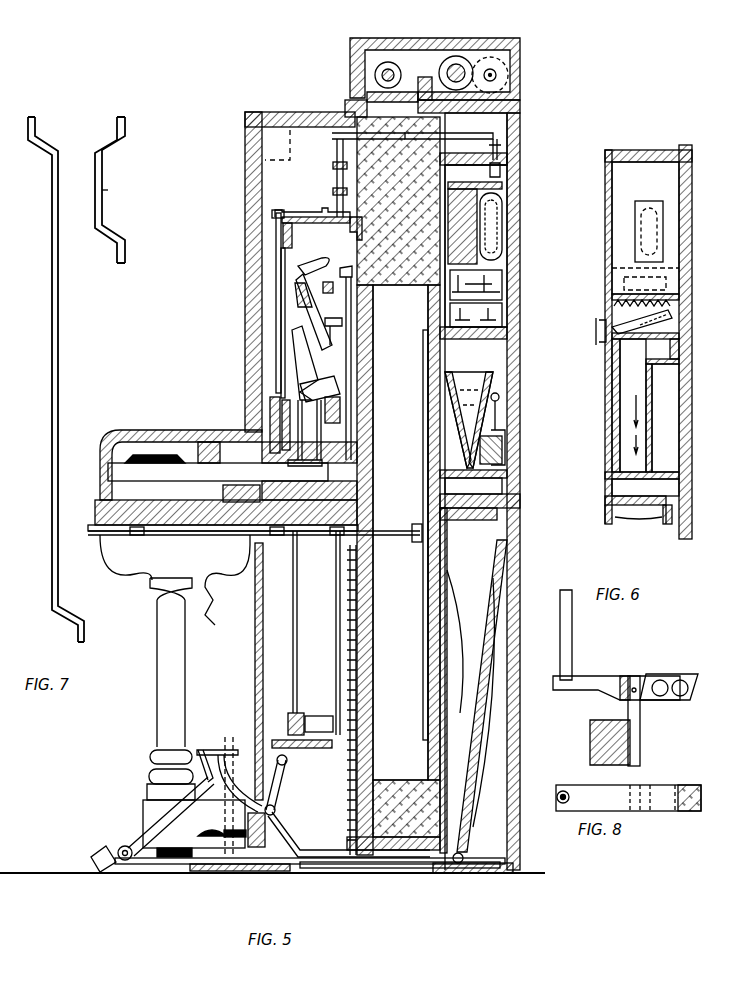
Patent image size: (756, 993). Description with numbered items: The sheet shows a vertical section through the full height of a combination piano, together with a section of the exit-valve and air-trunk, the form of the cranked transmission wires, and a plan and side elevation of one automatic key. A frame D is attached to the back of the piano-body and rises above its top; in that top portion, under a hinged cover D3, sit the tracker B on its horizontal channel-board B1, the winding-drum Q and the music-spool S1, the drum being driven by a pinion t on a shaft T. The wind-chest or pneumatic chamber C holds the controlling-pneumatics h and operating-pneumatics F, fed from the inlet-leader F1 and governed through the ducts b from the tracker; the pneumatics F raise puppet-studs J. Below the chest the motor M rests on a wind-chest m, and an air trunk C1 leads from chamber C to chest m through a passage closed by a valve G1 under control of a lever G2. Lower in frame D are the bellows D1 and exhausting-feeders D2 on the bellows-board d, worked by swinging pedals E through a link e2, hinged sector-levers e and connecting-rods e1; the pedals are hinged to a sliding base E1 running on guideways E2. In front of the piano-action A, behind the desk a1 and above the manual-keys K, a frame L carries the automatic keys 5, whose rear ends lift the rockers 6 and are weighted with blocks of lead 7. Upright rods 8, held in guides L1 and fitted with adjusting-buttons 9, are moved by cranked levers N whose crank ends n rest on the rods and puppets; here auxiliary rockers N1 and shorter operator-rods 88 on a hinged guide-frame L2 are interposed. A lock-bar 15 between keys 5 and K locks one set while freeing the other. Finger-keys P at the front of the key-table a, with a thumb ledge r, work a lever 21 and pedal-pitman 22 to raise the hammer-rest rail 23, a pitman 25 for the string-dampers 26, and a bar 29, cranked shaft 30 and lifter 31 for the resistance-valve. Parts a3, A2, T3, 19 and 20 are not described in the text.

In FIG. 5, the hinged cover D3 is at (405, 46).
In FIG. 5, the winding-drum Q is at (457, 56).
In FIG. 5, the music-spool S1 is at (376, 75).
In FIG. 5, the tracker B is at (424, 78).
In FIG. 5, the pinion t is at (497, 72).
In FIG. 5, the shaft T is at (497, 75).
In FIG. 5, the cranked wires or levers N is at (360, 120).
In FIG. 7, the cranked wires or levers N is at (52, 362).
In FIG. 5, the adjusting-buttons 9 is at (332, 133).
In FIG. 5, the horizontal channel-board B1 is at (505, 108).
In FIG. 5, the ducts b is at (520, 126).
In FIG. 5, the crank ends n is at (494, 147).
In FIG. 7, the crank ends n is at (90, 372).
In FIG. 5, the puppet-studs J is at (507, 158).
In FIG. 5, the shorter operator-rods 88 is at (333, 165).
In FIG. 5, the auxiliary rockers N1 is at (306, 215).
In FIG. 7, the auxiliary rockers N1 is at (114, 191).
In FIG. 5, the wind-chest or pneumatic chamber C is at (507, 205).
In FIG. 6, the wind-chest or pneumatic chamber C is at (645, 228).
In FIG. 5, the guides L1 is at (276, 238).
In FIG. 5, the support or frame L is at (294, 236).
In FIG. 8, the support or frame L is at (612, 721).
In FIG. 5, the bar or guide-frame L2 is at (340, 233).
In FIG. 5, the casing block a3 is at (392, 180).
In FIG. 5, the operating-pneumatics F is at (492, 240).
In FIG. 5, the upright rods or operators 8 is at (276, 270).
In FIG. 8, the upright rods or operators 8 is at (565, 608).
In FIG. 5, the inlet-leader F1 is at (502, 282).
In FIG. 5, the hammer-rest rail 23 is at (294, 298).
In FIG. 5, the string-dampers 26 is at (354, 272).
In FIG. 5, the piano-action A is at (300, 322).
In FIG. 5, the desk or front casing a1 is at (296, 345).
In FIG. 5, the controlling-pneumatics h is at (502, 318).
In FIG. 5, the column A2 is at (398, 570).
In FIG. 5, the lifter 31 is at (426, 370).
In FIG. 5, the hopper T3 is at (493, 372).
In FIG. 5, the automatic keys 5 is at (296, 395).
In FIG. 8, the automatic keys 5 is at (600, 676).
In FIG. 5, the lock-bar 15 is at (272, 412).
In FIG. 5, the rockers or tilting members 6 is at (340, 388).
In FIG. 5, the motor or air-engine M is at (500, 415).
In FIG. 5, the manual-keys K is at (170, 475).
In FIG. 5, the frame D is at (500, 440).
In FIG. 6, the frame D is at (662, 405).
In FIG. 5, the key-table or bed a is at (185, 505).
In FIG. 5, the wind-chest m is at (500, 487).
In FIG. 6, the wind-chest m is at (642, 488).
In FIG. 5, the ledge or plate r is at (95, 528).
In FIG. 5, the cranked shaft 30 is at (255, 528).
In FIG. 5, the finger-keys P is at (100, 540).
In FIG. 5, the lever 21 is at (269, 671).
In FIG. 5, the bar 29 is at (330, 545).
In FIG. 5, the pitman 25 is at (336, 565).
In FIG. 5, the pedal-pitman 22 is at (327, 700).
In FIG. 5, the bellows D1 is at (468, 610).
In FIG. 6, the bellows D1 is at (638, 527).
In FIG. 5, the bellows-board d is at (500, 590).
In FIG. 5, the link e2 is at (200, 748).
In FIG. 5, the block 20 is at (302, 719).
In FIG. 5, the hinged sector-levers e is at (276, 797).
In FIG. 5, the exhausting-feeders D2 is at (481, 720).
In FIG. 5, the swinging pedals E is at (150, 830).
In FIG. 5, the stop 19 is at (217, 823).
In FIG. 5, the horizontal frame or base E1 is at (200, 868).
In FIG. 5, the grooved cleats or guideways E2 is at (345, 868).
In FIG. 5, the connecting-rods e1 is at (420, 868).
In FIG. 6, the valve G1 is at (665, 322).
In FIG. 6, the lever G2 is at (600, 332).
In FIG. 6, the air trunk or conductor C1 is at (629, 405).
In FIG. 8, the blocks of lead 7 is at (665, 700).